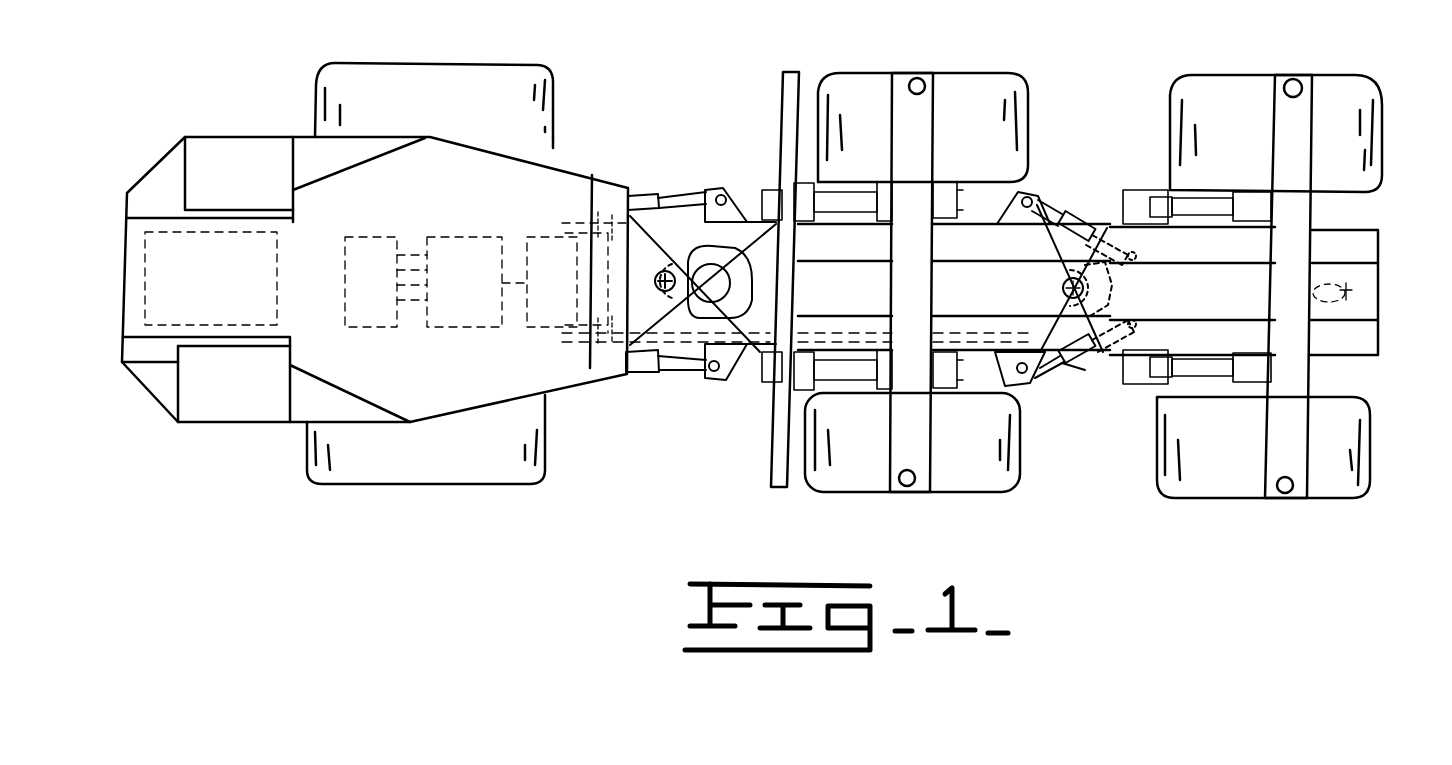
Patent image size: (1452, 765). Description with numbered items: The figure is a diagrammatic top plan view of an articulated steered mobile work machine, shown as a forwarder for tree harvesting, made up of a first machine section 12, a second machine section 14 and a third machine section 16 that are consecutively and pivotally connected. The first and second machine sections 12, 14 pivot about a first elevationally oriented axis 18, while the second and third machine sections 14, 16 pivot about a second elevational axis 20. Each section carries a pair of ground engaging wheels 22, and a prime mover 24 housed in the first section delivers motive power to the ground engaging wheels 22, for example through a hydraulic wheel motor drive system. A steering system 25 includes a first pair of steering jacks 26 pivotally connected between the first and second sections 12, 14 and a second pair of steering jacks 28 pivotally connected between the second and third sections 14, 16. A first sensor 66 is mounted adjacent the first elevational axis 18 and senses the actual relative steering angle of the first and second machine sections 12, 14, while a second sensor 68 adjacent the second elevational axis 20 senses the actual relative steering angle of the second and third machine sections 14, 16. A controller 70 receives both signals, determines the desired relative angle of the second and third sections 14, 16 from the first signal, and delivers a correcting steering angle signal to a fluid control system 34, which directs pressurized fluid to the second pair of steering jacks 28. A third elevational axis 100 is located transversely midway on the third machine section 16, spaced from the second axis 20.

The first machine section 12 is at (520, 175).
The second machine section 14 is at (856, 302).
The third machine section 16 is at (1223, 305).
The first elevationally oriented axis 18 is at (660, 272).
The second elevational axis 20 is at (1068, 282).
The ground engaging wheels 22 is at (548, 115).
The prime mover 24 is at (205, 235).
The steering system 25 is at (358, 344).
The first pair of steering jacks 26 is at (651, 372).
The second pair of steering jacks 28 is at (1078, 366).
The fluid control system 34 is at (548, 235).
The first sensor 66 is at (718, 258).
The second sensor 68 is at (1060, 290).
The controller 70 is at (440, 235).
The third elevational axis 100 is at (1344, 293).